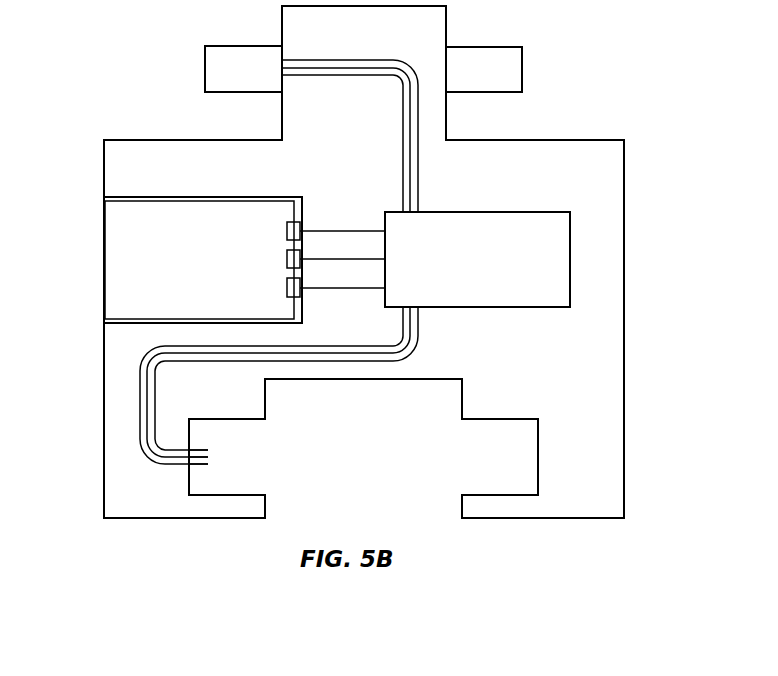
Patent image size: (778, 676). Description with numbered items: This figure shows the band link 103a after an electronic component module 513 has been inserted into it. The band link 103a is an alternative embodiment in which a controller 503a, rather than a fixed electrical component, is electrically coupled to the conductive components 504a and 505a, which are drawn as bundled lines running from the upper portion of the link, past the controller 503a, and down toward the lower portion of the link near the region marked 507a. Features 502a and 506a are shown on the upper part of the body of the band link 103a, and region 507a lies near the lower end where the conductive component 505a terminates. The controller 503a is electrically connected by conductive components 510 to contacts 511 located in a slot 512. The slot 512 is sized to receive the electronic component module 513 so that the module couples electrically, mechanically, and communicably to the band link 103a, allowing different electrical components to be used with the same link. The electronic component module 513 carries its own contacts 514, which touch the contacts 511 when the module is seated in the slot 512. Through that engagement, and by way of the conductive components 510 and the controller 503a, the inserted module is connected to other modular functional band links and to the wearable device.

The band link 103a is at (624, 195).
The upper block of housing 502a is at (446, 20).
The controller 503a is at (570, 255).
The conductive component 504a is at (418, 172).
The conductive component 505a is at (418, 328).
The side protrusion 506a is at (205, 68).
The cable end 507a is at (200, 466).
The conductive components 510 is at (346, 230).
The contacts 511 is at (297, 201).
The slot 512 is at (104, 196).
The electronic component module 513 is at (104, 263).
The contacts 514 is at (289, 222).